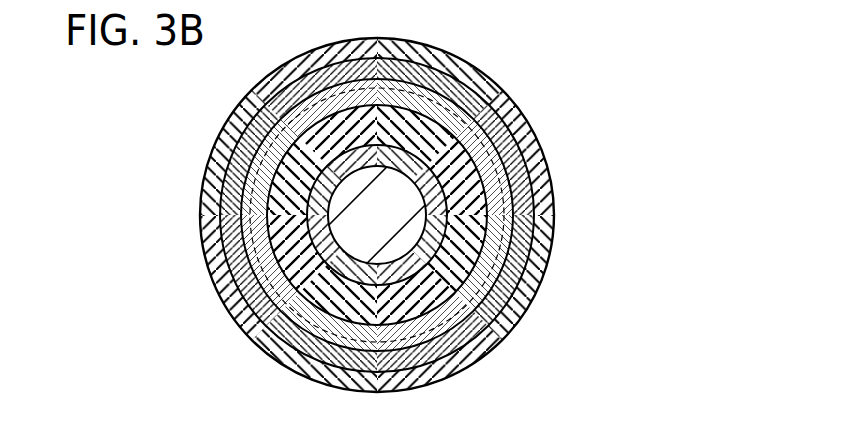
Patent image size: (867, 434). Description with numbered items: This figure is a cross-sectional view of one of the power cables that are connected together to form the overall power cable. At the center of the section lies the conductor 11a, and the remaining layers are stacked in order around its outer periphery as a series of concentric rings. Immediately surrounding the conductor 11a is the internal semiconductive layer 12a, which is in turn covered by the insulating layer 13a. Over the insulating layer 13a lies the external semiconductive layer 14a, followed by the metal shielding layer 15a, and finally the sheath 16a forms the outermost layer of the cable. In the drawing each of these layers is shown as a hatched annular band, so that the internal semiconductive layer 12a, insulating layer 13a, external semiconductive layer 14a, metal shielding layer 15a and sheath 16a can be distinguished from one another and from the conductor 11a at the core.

The conductor 11a is at (381, 183).
The internal semiconductive layer 12a is at (432, 185).
The insulating layer 13a is at (472, 205).
The external semiconductive layer 14a is at (500, 235).
The metal shielding layer 15a is at (517, 262).
The sheath 16a is at (518, 297).